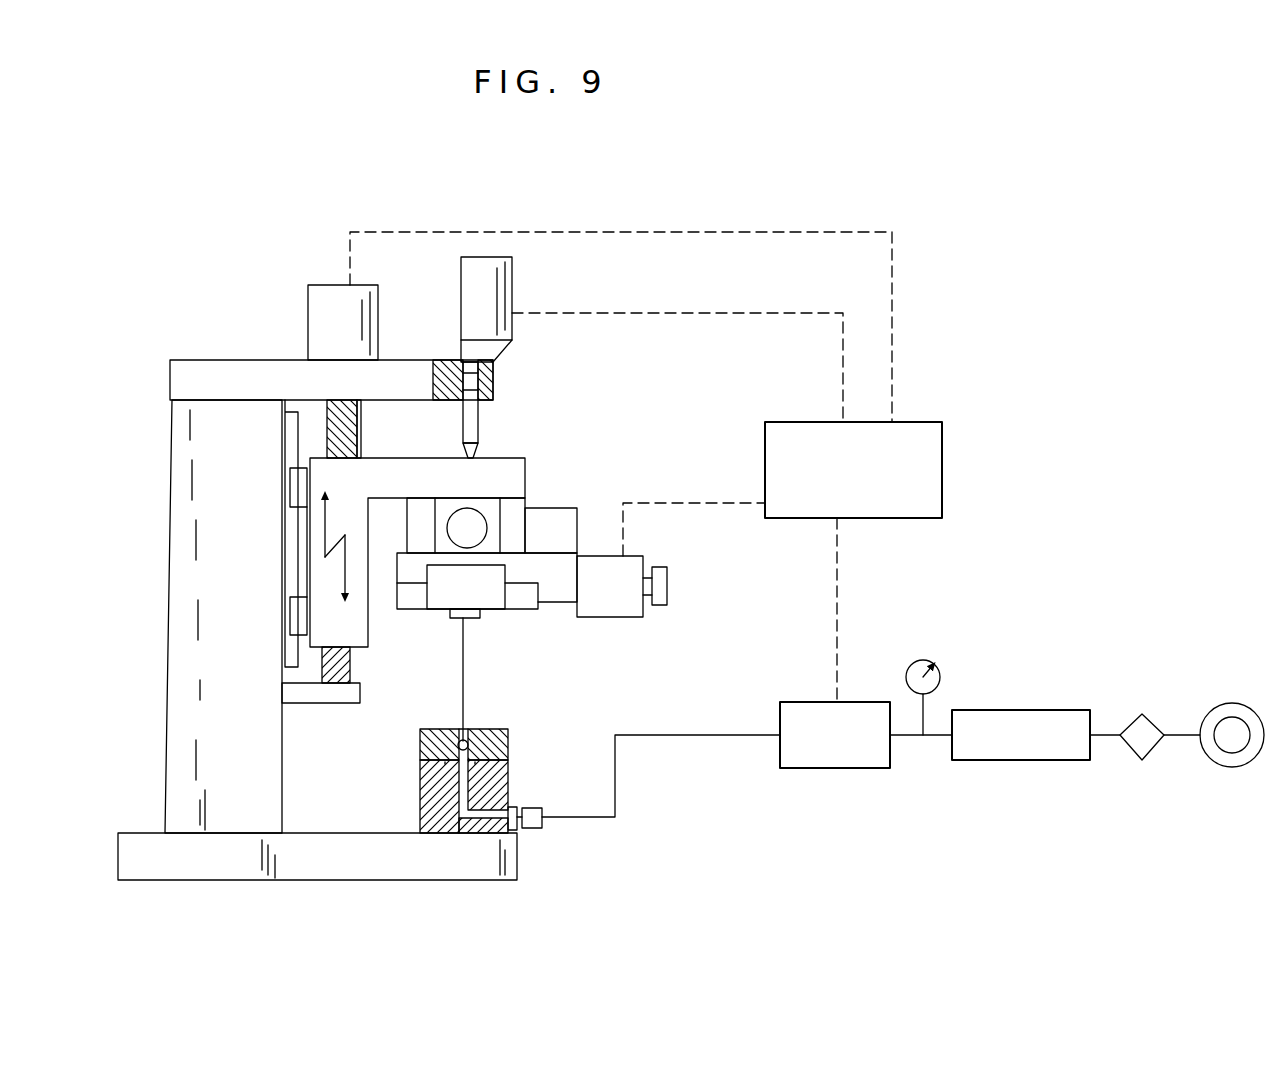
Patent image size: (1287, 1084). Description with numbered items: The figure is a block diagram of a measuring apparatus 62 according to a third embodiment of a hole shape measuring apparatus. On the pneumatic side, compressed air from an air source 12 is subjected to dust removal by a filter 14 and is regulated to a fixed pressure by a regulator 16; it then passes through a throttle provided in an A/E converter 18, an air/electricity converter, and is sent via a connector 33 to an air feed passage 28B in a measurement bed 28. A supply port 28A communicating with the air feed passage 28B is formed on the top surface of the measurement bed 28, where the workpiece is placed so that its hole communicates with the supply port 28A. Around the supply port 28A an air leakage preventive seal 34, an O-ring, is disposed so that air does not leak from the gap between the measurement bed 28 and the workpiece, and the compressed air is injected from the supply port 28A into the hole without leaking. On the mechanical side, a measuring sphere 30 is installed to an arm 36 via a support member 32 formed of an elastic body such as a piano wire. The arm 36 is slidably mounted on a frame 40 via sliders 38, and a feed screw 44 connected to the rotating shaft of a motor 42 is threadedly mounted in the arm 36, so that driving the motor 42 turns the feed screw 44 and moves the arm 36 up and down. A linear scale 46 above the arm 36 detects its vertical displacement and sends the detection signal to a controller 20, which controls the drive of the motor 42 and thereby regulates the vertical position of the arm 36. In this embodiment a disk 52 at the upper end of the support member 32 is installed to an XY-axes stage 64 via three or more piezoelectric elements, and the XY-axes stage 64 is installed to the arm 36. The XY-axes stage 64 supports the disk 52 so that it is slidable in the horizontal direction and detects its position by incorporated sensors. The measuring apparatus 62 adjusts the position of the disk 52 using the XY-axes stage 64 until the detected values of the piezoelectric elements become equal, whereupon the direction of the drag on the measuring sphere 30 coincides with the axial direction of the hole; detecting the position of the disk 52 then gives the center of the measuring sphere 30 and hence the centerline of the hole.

The air source 12 is at (1232, 703).
The filter 14 is at (1135, 716).
The regulator 16 is at (978, 710).
The A/E converter 18 is at (783, 702).
The controller 20 is at (942, 494).
The measurement bed 28 is at (462, 813).
The supply port 28A is at (498, 752).
The air feed passage 28B is at (466, 833).
The measuring sphere 30 is at (490, 729).
The support member 32 is at (465, 688).
The connector 33 is at (534, 829).
The air leakage preventive seal 34 is at (436, 780).
The arm 36 is at (500, 472).
The slider 38 is at (290, 492).
The frame 40 is at (182, 732).
The motor 42 is at (370, 310).
The feed screw 44 is at (357, 432).
The linear scale 46 is at (512, 300).
The disk 52 is at (468, 620).
The measuring apparatus 62 is at (820, 224).
The XY-axes stage 64 is at (585, 524).